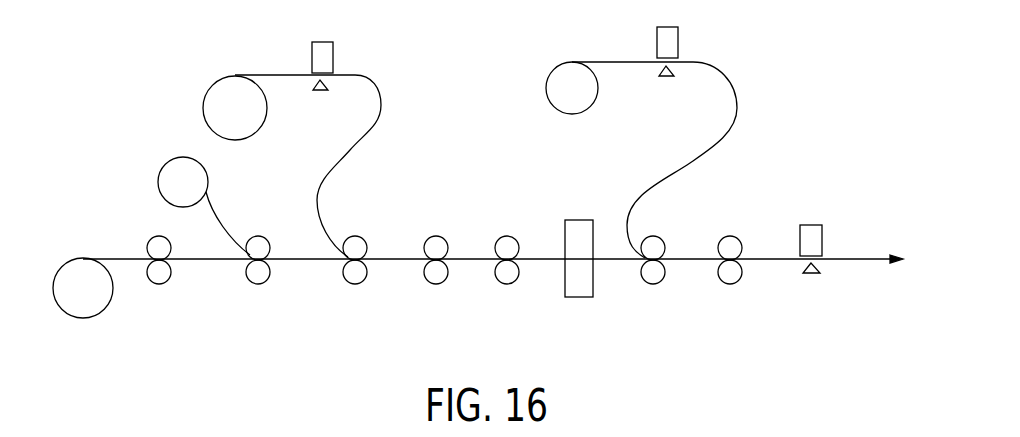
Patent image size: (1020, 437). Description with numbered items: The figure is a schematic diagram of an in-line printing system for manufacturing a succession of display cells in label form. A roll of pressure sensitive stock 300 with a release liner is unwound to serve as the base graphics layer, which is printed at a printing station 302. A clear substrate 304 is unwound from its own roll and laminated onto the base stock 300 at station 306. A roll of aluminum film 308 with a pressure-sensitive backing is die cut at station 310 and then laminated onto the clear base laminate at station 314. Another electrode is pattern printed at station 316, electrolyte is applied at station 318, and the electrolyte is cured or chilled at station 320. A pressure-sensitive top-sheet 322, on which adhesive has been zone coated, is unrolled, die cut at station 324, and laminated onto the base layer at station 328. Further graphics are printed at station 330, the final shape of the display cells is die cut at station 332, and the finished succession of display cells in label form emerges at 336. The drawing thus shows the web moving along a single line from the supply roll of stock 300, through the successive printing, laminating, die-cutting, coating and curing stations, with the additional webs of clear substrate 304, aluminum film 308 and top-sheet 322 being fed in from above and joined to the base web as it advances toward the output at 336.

The pressure sensitive stock 300 is at (92, 318).
The printing station 302 is at (162, 284).
The clear substrate 304 is at (158, 178).
The laminating station 306 is at (265, 284).
The aluminum film 308 is at (232, 75).
The die cutting station 310 is at (333, 52).
The laminating station 314 is at (357, 284).
The electrode printing station 316 is at (440, 284).
The electrolyte application station 318 is at (508, 284).
The curing station 320 is at (580, 297).
The pressure-sensitive top-sheet 322 is at (560, 68).
The die cutting station 324 is at (678, 45).
The laminating station 328 is at (655, 284).
The graphics printing station 330 is at (733, 284).
The final die cutting station 332 is at (800, 237).
The display cell output 336 is at (865, 261).